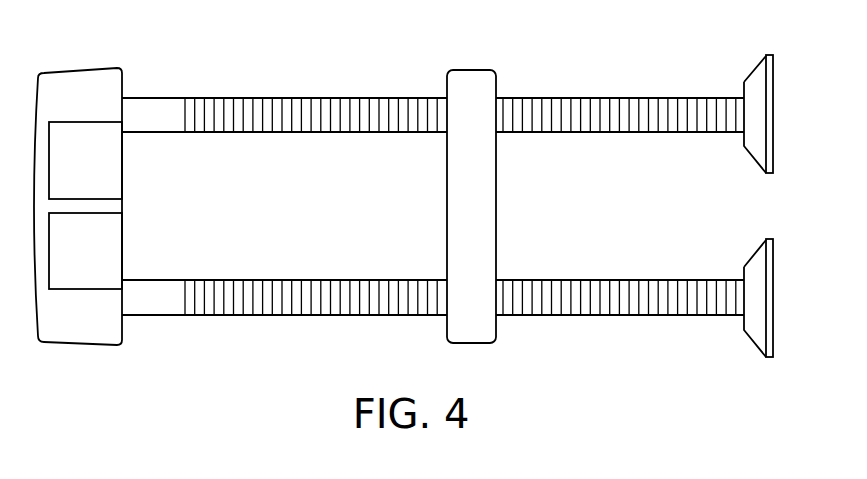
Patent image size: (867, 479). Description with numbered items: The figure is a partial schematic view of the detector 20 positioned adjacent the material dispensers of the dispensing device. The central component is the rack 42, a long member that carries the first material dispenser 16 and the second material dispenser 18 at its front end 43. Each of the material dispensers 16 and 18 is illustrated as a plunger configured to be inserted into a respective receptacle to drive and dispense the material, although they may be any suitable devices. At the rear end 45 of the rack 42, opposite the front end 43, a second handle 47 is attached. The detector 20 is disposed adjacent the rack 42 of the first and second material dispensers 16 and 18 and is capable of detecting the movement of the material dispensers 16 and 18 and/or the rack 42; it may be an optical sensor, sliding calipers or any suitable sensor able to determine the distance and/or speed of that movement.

The material dispenser 16 is at (773, 332).
The second material dispenser 18 is at (760, 128).
The detector 20 is at (472, 98).
The rack 42 is at (275, 120).
The front end 43 is at (742, 112).
The rear end 45 is at (150, 113).
The second handle 47 is at (78, 100).